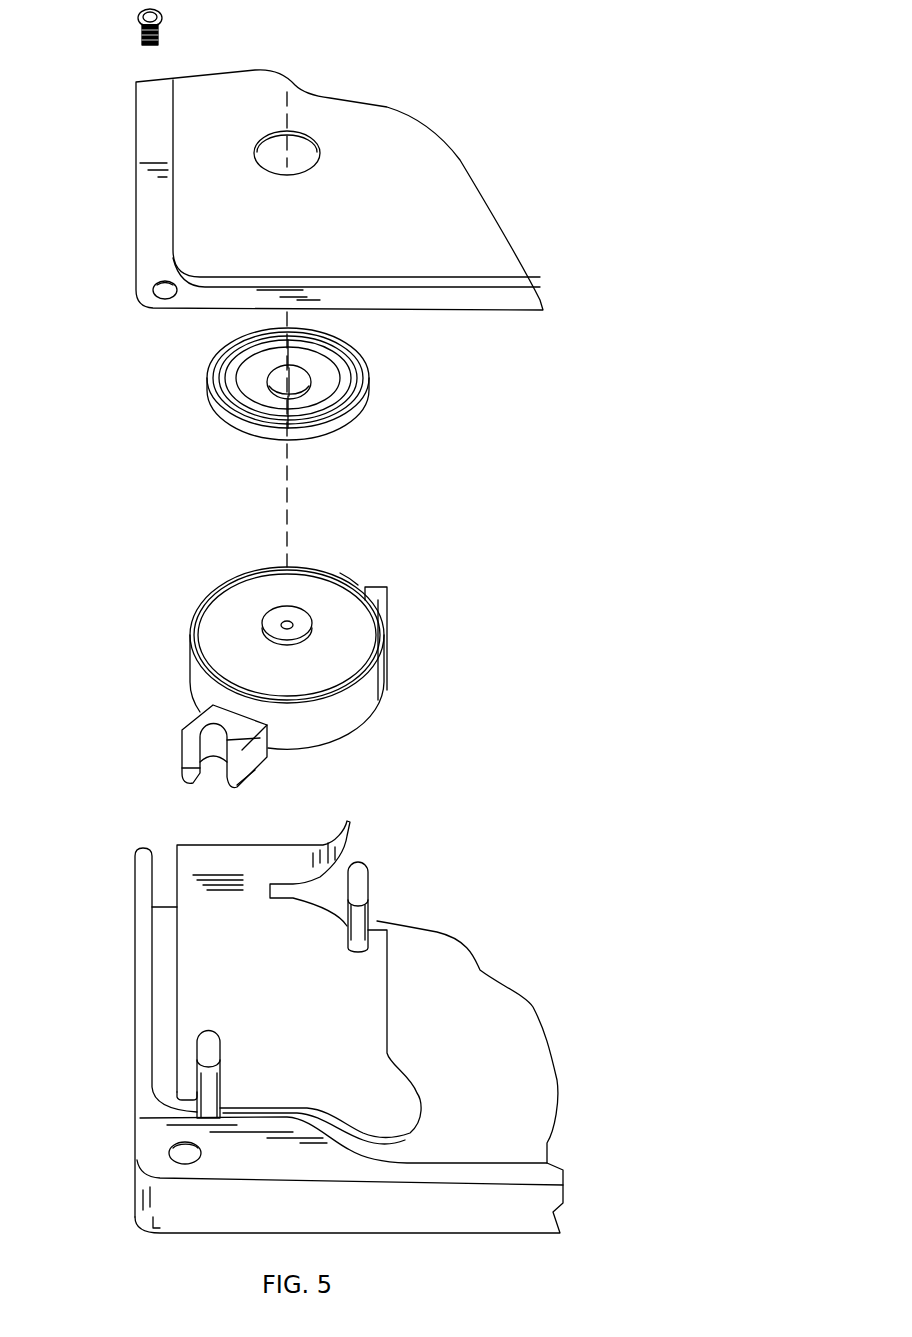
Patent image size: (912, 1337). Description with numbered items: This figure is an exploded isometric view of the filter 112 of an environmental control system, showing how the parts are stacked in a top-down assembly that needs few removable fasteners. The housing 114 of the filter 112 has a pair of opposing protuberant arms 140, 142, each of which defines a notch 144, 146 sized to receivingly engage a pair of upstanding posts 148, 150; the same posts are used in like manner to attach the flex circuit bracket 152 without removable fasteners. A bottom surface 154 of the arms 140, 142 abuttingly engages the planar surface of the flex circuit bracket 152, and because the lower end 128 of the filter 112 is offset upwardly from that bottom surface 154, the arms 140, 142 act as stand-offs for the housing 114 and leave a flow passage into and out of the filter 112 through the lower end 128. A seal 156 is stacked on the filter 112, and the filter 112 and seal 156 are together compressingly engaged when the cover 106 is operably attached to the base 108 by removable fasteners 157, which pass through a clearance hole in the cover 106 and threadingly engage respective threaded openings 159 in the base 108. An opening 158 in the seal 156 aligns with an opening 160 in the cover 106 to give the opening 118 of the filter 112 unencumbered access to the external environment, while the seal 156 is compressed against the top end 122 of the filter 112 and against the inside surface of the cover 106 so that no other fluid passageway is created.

The cover 106 is at (135, 195).
The base 108 is at (327, 1046).
The filter 112 is at (288, 663).
The housing 114 is at (188, 662).
The opening 118 is at (287, 622).
The top end 122 is at (385, 652).
The lower end 128 is at (362, 723).
The protuberant arm 140 is at (243, 737).
The protuberant arm 142 is at (390, 590).
The notch 144 is at (217, 795).
The notch 146 is at (359, 570).
The upstanding post 148 is at (198, 1050).
The upstanding post 150 is at (368, 878).
The flex circuit bracket 152 is at (182, 947).
The bottom surface 154 is at (253, 767).
The seal 156 is at (370, 382).
The removable fastener 157 is at (140, 16).
The opening 158 is at (252, 373).
The threaded opening 159 is at (170, 1149).
The opening 160 is at (310, 152).